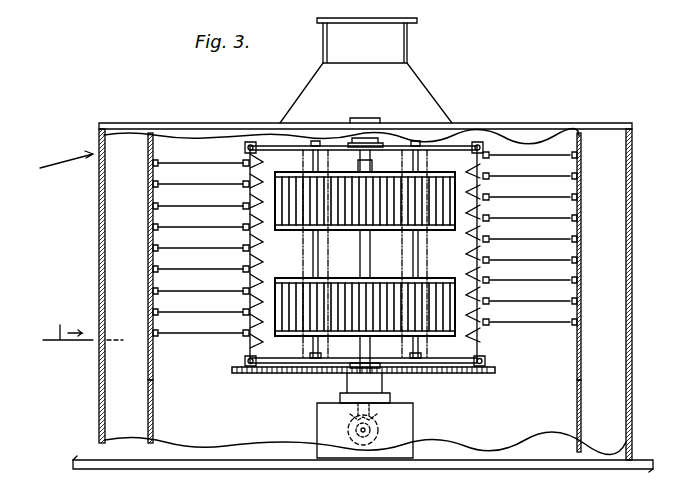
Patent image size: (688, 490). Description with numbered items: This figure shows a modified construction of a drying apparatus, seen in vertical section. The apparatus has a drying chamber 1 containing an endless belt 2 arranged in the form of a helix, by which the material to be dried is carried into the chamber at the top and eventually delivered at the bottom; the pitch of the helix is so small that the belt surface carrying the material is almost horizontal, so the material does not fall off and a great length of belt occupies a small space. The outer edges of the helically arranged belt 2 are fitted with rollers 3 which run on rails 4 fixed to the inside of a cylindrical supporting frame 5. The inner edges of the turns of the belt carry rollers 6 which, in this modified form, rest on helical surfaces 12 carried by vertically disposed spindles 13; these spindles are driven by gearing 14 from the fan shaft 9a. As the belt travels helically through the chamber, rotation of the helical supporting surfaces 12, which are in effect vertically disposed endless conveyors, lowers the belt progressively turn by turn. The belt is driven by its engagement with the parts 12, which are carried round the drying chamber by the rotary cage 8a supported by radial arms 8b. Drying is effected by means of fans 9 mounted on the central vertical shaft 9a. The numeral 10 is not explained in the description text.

The drying chamber 1 is at (145, 124).
The endless belt 2 is at (147, 172).
The rollers 3 is at (147, 283).
The rails 4 is at (147, 197).
The cylindrical supporting frame 5 is at (147, 402).
The rollers 6 is at (258, 178).
The rotary cage 8a is at (253, 145).
The radial arms 8b is at (380, 140).
The fans 9 is at (410, 200).
The central vertical shaft 9a is at (361, 251).
The tray brackets 10 is at (560, 162).
The helical surfaces 12 is at (492, 155).
The spindles 13 is at (512, 163).
The gearing 14 is at (262, 375).